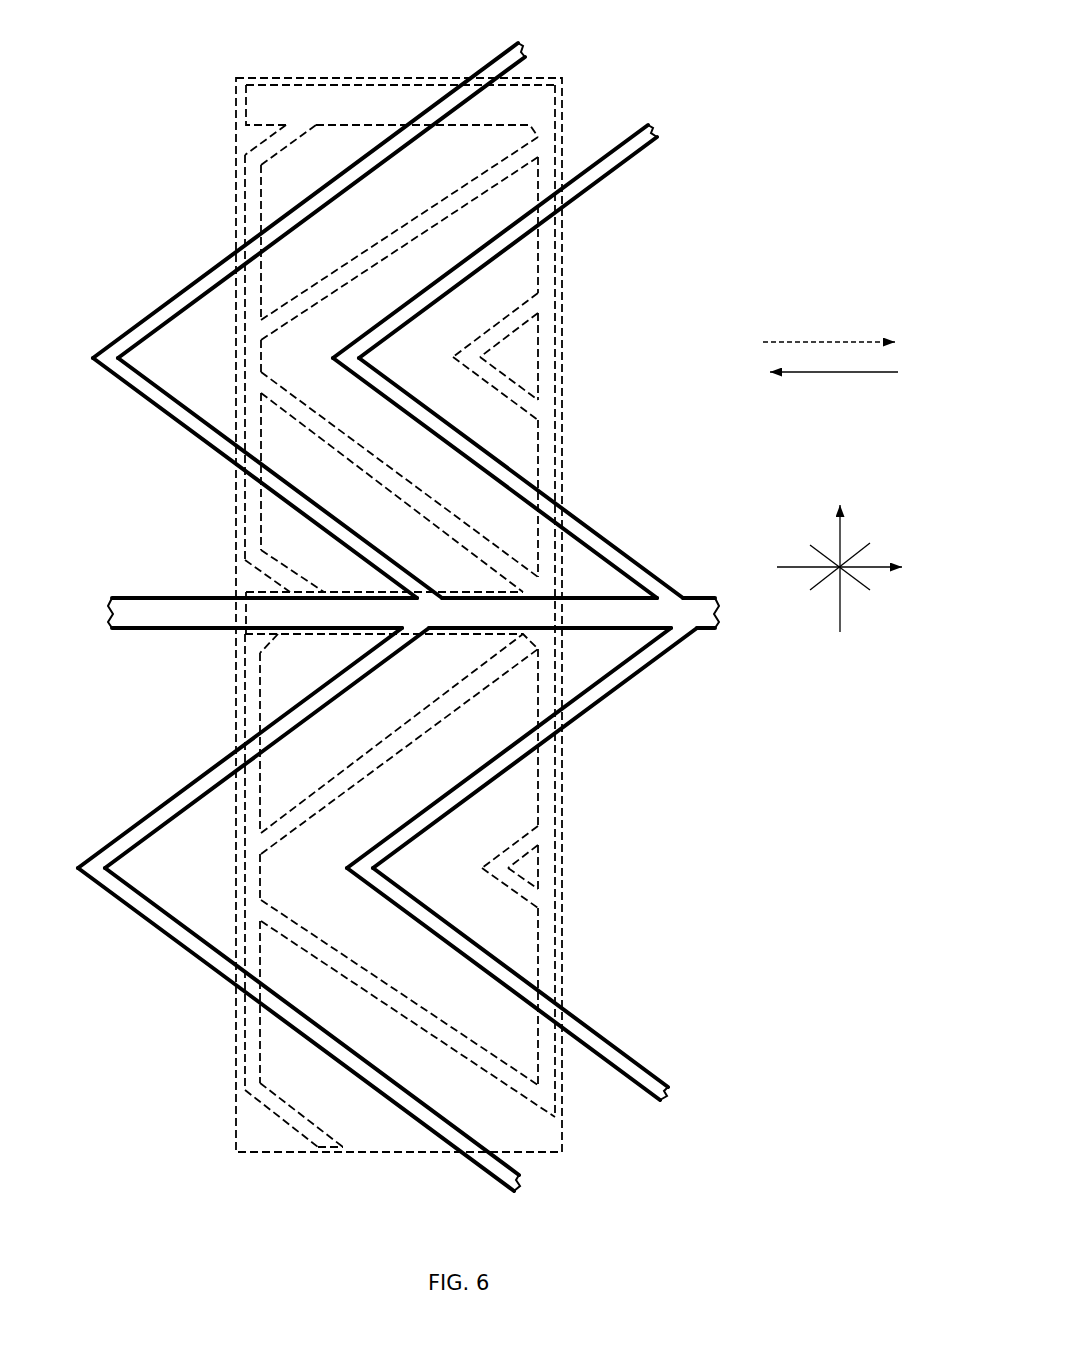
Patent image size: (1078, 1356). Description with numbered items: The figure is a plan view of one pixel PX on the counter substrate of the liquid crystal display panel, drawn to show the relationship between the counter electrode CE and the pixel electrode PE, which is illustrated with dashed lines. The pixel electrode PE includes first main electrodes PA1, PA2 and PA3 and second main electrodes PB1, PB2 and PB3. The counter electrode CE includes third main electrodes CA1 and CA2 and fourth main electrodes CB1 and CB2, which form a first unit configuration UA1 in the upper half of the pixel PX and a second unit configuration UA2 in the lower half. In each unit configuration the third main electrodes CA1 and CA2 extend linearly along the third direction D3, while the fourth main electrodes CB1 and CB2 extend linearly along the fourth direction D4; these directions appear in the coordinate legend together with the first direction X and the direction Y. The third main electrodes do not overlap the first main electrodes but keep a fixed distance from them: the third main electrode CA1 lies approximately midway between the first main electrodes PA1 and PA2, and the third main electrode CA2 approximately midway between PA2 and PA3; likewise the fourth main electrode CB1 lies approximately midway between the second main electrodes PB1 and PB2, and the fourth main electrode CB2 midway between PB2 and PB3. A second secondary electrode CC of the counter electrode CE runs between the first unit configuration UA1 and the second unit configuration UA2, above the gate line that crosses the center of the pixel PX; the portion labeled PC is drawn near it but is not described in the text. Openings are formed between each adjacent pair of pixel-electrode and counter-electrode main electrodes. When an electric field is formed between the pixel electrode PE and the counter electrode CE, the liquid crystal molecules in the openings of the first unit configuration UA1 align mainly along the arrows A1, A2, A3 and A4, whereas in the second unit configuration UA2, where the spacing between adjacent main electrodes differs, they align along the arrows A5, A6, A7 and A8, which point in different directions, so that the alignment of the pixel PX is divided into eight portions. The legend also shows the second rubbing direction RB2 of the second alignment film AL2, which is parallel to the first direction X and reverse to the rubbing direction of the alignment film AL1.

The pixel PX is at (404, 77).
The pixel electrode PE is at (565, 104).
The first main electrode PA1 is at (268, 142).
The first main electrode PA2 is at (453, 198).
The first main electrode PA3 is at (490, 330).
The second main electrode PB1 is at (267, 577).
The second main electrode PB2 is at (335, 427).
The second main electrode PB3 is at (494, 392).
The counter electrode CE is at (387, 631).
The third main electrode CA1 is at (193, 298).
The third main electrode CA2 is at (610, 165).
The fourth main electrode CB1 is at (290, 496).
The fourth main electrode CB2 is at (643, 577).
The second secondary electrode CC is at (112, 613).
The pixel contact portion PC is at (445, 641).
The first unit configuration UA1 is at (585, 369).
The second unit configuration UA2 is at (586, 871).
The arrow A1 is at (304, 183).
The arrow A2 is at (339, 216).
The arrow A3 is at (478, 491).
The arrow A4 is at (509, 457).
The arrow A5 is at (300, 684).
The arrow A6 is at (334, 718).
The arrow A7 is at (478, 991).
The arrow A8 is at (510, 954).
The alignment film AL1 is at (827, 340).
The second alignment film AL2 is at (1069, 1333).
The second rubbing direction RB2 is at (832, 376).
The third direction D3 is at (867, 543).
The fourth direction D4 is at (867, 592).
The first direction X is at (849, 570).
The Y axis direction Y is at (839, 555).